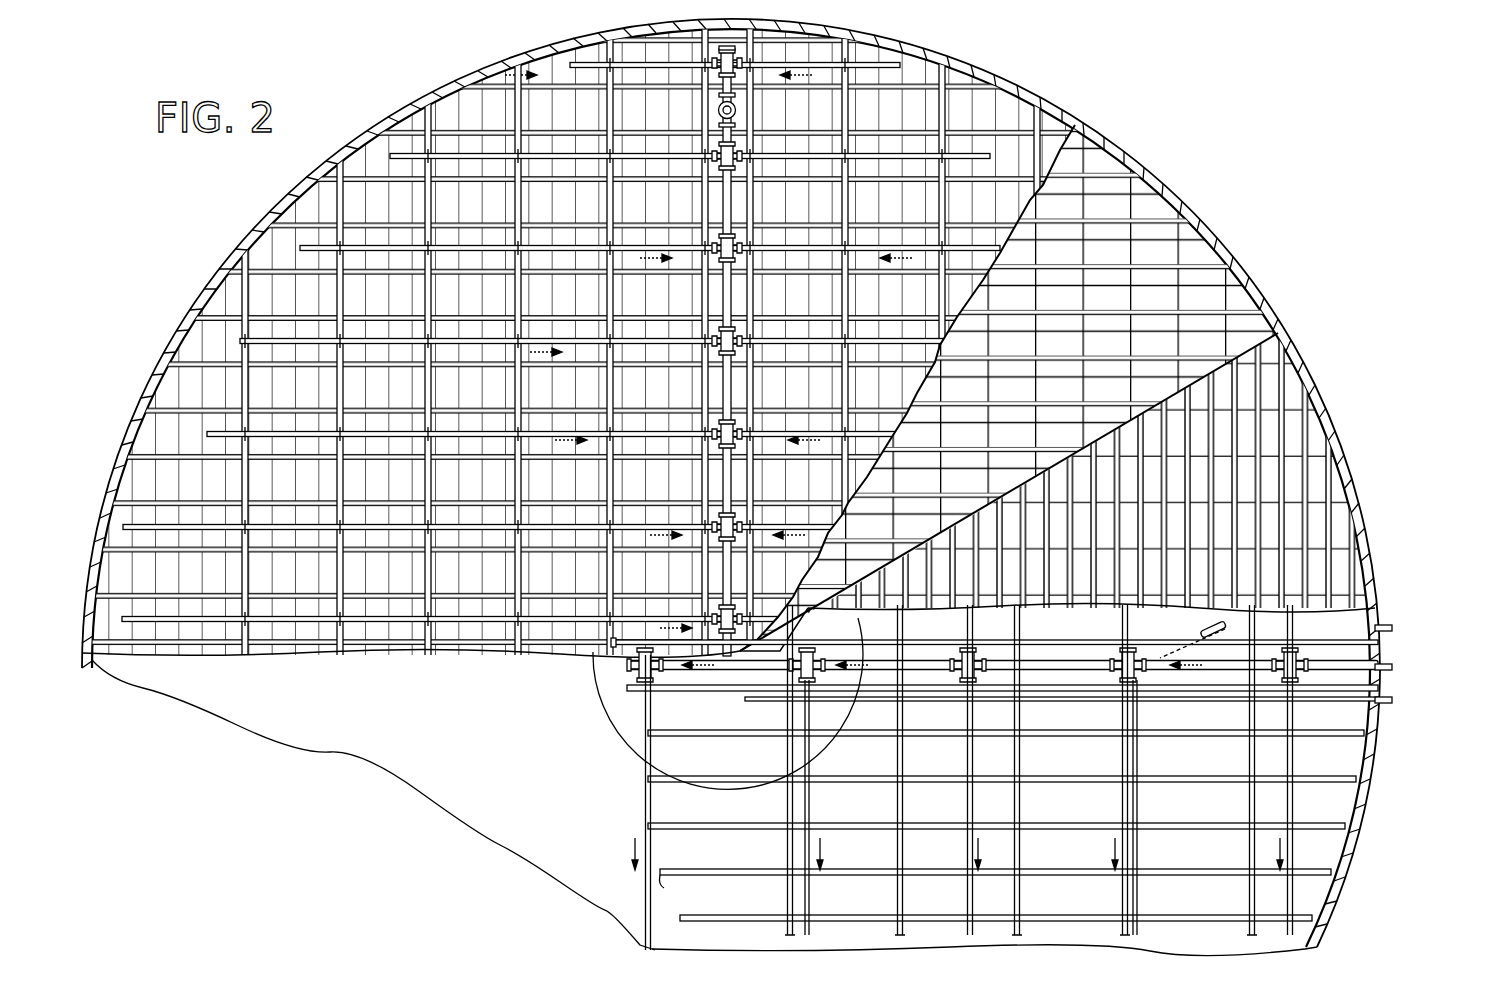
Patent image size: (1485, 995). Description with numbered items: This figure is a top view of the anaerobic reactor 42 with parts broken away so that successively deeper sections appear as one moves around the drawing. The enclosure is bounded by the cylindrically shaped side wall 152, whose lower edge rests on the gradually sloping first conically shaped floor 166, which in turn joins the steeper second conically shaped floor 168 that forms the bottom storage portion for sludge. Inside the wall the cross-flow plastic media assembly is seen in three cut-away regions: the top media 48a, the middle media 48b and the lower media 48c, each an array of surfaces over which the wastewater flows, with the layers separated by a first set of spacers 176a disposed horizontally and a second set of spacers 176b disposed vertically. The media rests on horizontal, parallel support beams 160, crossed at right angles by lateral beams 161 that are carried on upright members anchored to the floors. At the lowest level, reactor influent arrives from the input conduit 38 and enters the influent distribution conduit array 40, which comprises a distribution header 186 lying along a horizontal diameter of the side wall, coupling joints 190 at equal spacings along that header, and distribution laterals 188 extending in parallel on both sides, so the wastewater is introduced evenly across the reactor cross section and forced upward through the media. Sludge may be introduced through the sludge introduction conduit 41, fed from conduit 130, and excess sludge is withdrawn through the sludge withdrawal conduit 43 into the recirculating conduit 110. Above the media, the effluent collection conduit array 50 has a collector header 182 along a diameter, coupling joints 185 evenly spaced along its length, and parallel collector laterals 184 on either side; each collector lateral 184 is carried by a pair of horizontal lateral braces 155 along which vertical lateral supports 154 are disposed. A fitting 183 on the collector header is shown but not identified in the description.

The input conduit 38 is at (1393, 670).
The influent distribution conduit array 40 is at (614, 672).
The sludge introduction conduit 41 is at (1203, 630).
The anaerobic reactor 42 is at (731, 484).
The sludge withdrawal conduit 43 is at (1053, 700).
The top media 48a is at (622, 330).
The middle media 48b is at (1085, 330).
The lower media 48c is at (770, 493).
The effluent collection conduit array 50 is at (712, 92).
The recirculating conduit 110 is at (1402, 632).
The conduit 130 is at (1393, 703).
The cylindrically shaped side wall 152 is at (1305, 374).
The lateral support 154 is at (592, 145).
The lateral brace 155 is at (470, 136).
The support beam 160 is at (1180, 740).
The lateral beam 161 is at (1020, 856).
The first conically shaped floor 166 is at (466, 782).
The second conically shaped floor 168 is at (738, 772).
The first set of spacers 176a is at (1140, 185).
The second set of spacers 176b is at (1305, 566).
The collector header 182 is at (722, 202).
The coupling 183 is at (738, 112).
The collector lateral 184 is at (822, 70).
The coupling joint 185 is at (728, 264).
The distribution header 186 is at (1052, 664).
The distribution lateral 188 is at (644, 888).
The coupling joint 190 is at (968, 657).